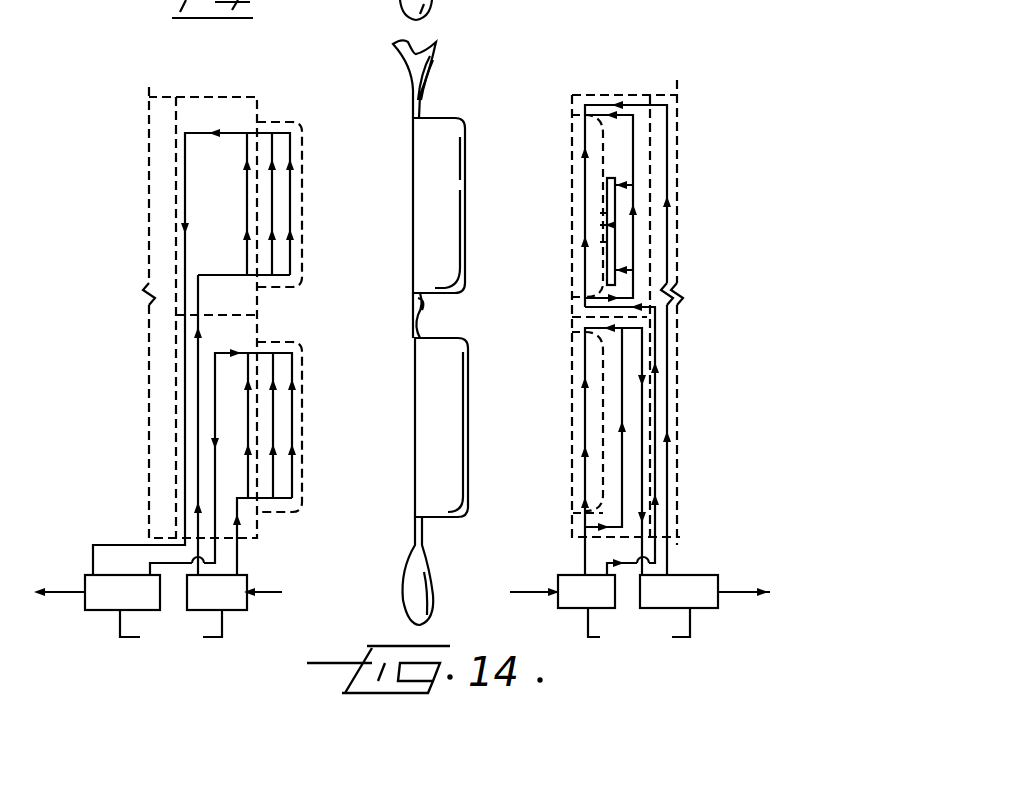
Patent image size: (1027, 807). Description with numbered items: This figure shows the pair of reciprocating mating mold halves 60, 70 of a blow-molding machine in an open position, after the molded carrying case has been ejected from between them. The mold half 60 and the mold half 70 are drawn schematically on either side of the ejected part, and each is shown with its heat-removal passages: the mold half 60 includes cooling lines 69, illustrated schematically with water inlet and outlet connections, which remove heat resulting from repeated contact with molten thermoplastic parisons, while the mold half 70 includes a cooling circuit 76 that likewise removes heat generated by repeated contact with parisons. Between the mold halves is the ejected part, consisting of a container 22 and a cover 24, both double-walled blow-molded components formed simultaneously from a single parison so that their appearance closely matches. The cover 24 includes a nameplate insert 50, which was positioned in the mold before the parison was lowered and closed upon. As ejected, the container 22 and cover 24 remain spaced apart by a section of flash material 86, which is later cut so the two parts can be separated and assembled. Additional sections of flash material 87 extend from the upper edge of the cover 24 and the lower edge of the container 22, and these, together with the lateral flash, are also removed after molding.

The container member 22 is at (440, 387).
The cover 24 is at (440, 167).
The nameplate insert 50 is at (467, 225).
The mold half 60 is at (639, 67).
The cooling lines 69 is at (680, 453).
The mold half 70 is at (181, 84).
The cooling circuit 76 is at (198, 483).
The section of flash material 86 is at (423, 305).
The sections of flash material 87 is at (435, 95).